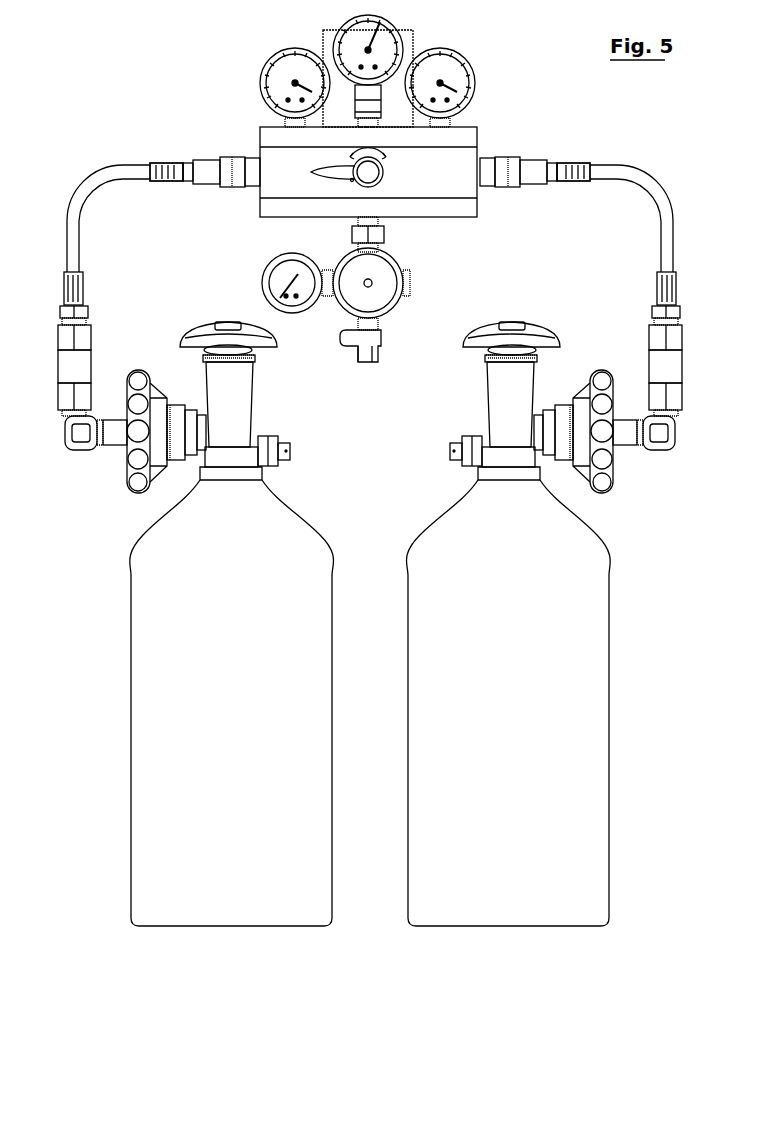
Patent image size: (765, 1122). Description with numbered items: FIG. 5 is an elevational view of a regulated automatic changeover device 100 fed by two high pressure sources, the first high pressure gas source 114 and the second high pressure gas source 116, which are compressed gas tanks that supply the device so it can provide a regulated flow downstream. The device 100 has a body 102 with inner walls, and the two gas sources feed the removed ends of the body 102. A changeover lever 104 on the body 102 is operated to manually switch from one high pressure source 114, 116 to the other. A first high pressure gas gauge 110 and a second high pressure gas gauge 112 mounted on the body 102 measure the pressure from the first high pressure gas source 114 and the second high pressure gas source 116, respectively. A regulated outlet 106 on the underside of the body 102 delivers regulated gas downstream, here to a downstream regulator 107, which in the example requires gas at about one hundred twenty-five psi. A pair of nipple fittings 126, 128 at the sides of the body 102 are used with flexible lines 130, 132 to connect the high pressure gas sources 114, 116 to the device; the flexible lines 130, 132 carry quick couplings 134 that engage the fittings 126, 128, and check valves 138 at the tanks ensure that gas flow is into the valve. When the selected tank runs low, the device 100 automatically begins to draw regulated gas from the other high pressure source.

The regulated automatic changeover device 100 is at (483, 127).
The body 102 is at (465, 217).
The changeover lever 104 is at (395, 163).
The regulated outlet 106 is at (352, 220).
The downstream regulator 107 is at (363, 298).
The first high pressure gas gauge 110 is at (277, 52).
The second high pressure gas gauge 112 is at (463, 52).
The first high pressure gas source 114 is at (168, 623).
The second high pressure gas source 116 is at (577, 620).
The nipple fitting 126 is at (256, 160).
The nipple fitting 128 is at (484, 160).
The flexible line 130 is at (661, 228).
The flexible line 132 is at (79, 228).
The quick coupling 134 is at (212, 187).
The check valve 138 is at (83, 362).